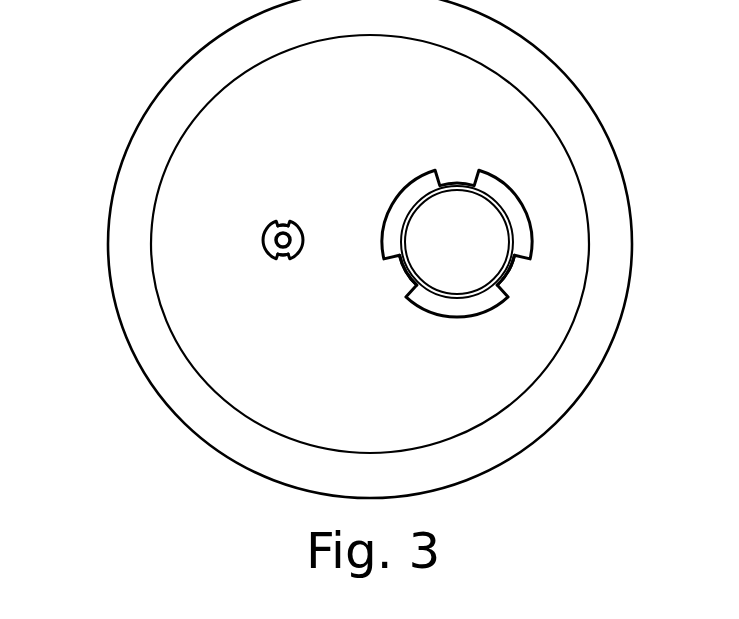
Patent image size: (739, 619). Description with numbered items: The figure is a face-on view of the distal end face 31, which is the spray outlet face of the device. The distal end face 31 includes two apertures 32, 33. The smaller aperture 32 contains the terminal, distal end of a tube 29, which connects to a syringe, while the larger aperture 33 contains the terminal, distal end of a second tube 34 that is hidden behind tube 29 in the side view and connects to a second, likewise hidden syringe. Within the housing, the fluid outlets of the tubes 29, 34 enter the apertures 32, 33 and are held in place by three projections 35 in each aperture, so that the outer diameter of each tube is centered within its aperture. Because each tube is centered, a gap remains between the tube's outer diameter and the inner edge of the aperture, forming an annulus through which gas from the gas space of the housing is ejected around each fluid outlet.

The tube 29 is at (283, 226).
The distal end face 31 is at (210, 127).
The aperture 32 is at (245, 272).
The aperture 33 is at (430, 165).
The tube 34 is at (495, 204).
The projections 35 is at (265, 238).